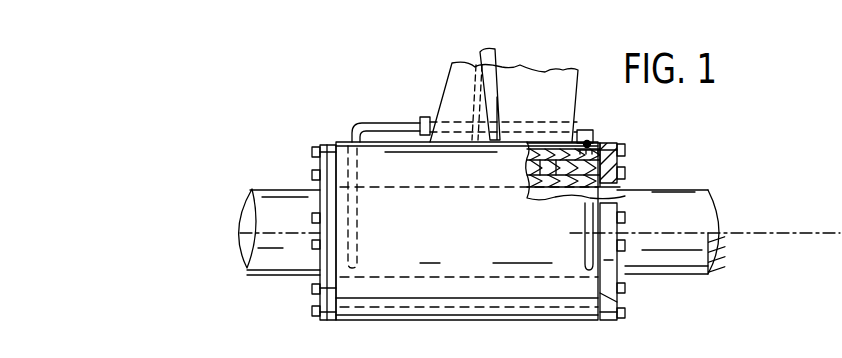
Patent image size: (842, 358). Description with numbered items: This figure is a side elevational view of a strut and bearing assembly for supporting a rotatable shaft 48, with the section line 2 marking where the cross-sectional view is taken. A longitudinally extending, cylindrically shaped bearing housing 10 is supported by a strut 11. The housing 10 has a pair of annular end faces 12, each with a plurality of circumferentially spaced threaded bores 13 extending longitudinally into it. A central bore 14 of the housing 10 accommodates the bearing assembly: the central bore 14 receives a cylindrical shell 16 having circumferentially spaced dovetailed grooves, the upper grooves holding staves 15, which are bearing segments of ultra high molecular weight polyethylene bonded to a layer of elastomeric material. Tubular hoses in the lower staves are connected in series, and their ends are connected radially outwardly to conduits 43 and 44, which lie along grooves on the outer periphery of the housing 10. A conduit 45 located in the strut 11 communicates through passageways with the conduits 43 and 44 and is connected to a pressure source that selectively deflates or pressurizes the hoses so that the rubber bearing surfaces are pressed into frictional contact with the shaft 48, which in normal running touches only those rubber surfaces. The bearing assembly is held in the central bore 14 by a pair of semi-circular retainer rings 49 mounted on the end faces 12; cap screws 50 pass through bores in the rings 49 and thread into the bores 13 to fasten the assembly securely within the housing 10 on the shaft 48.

The section line 2- 2 is at (360, 100).
The bearing housing 10 is at (475, 237).
The strut 11 is at (553, 85).
The annular end faces 12 is at (313, 167).
The threaded bores 13 is at (623, 168).
The central bore 14 is at (540, 128).
The staves 15 is at (527, 173).
The cylindrical shell 16 is at (548, 160).
The conduit 43 is at (387, 125).
The conduit 44 is at (587, 240).
The conduit 45 is at (497, 63).
The shaft 48 is at (702, 205).
The semi-circular retainer rings 49 is at (328, 150).
The cap screws 50 is at (312, 220).